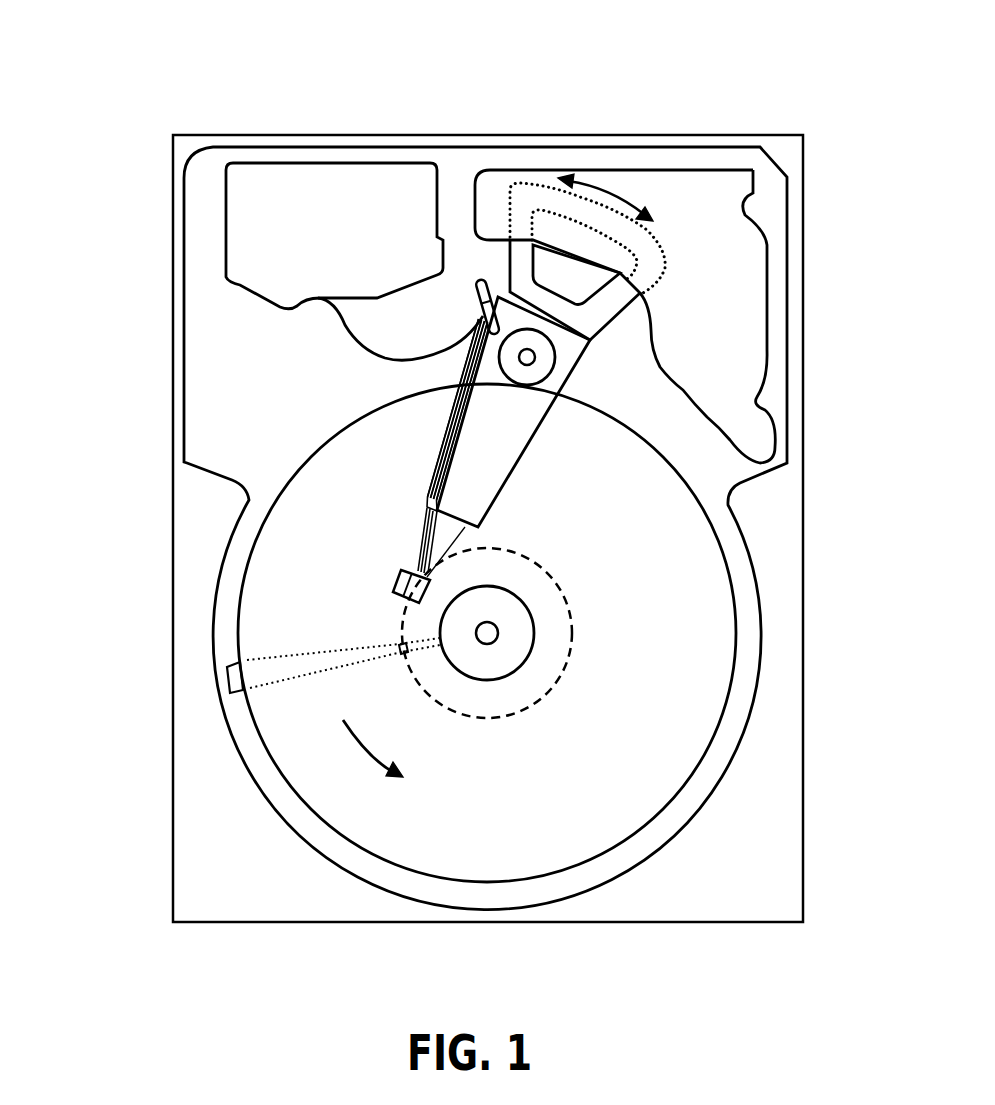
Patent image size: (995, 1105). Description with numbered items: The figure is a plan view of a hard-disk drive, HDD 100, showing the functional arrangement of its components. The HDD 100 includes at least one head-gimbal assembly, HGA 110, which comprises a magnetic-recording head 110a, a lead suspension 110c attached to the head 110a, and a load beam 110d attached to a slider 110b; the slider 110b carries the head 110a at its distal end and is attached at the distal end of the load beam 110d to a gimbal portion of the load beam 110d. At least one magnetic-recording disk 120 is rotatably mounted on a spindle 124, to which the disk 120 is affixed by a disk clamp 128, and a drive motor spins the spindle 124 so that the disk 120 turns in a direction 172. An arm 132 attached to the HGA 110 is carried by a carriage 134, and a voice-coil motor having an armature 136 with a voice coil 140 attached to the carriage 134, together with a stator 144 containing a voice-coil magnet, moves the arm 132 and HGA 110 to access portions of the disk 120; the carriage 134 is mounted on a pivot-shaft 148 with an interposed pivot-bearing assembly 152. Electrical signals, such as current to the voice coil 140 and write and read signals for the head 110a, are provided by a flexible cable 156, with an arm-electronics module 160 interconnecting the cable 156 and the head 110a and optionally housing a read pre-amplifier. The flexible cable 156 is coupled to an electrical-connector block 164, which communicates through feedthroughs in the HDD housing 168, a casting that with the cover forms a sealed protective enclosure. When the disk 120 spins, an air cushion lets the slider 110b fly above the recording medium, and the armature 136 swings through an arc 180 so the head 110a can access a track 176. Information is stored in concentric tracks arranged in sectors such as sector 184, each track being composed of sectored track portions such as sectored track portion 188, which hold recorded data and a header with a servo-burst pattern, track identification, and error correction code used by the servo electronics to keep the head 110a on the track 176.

The hard-disk drive 100 is at (138, 66).
The head-gimbal assembly 110 is at (100, 440).
The magnetic-recording head 110a is at (397, 577).
The slider 110b is at (420, 562).
The lead suspension 110c is at (427, 530).
The load beam 110d is at (423, 507).
The magnetic-recording disk 120 is at (668, 587).
The spindle 124 is at (497, 632).
The disk clamp 128 is at (513, 648).
The arm 132 is at (483, 468).
The carriage 134 is at (545, 392).
The armature 136 is at (503, 245).
The voice coil 140 is at (507, 268).
The stator 144 is at (737, 262).
The pivot-shaft 148 is at (535, 357).
The pivot-bearing assembly 152 is at (538, 368).
The flexible cable 156 is at (347, 330).
The arm-electronics module 160 is at (480, 325).
The electrical-connector block 164 is at (250, 237).
The HDD housing 168 is at (795, 143).
The direction of disk rotation 172 is at (377, 752).
The track 176 is at (563, 592).
The arc 180 is at (522, 250).
The sector 184 is at (223, 678).
The sectored track portion 188 is at (393, 647).